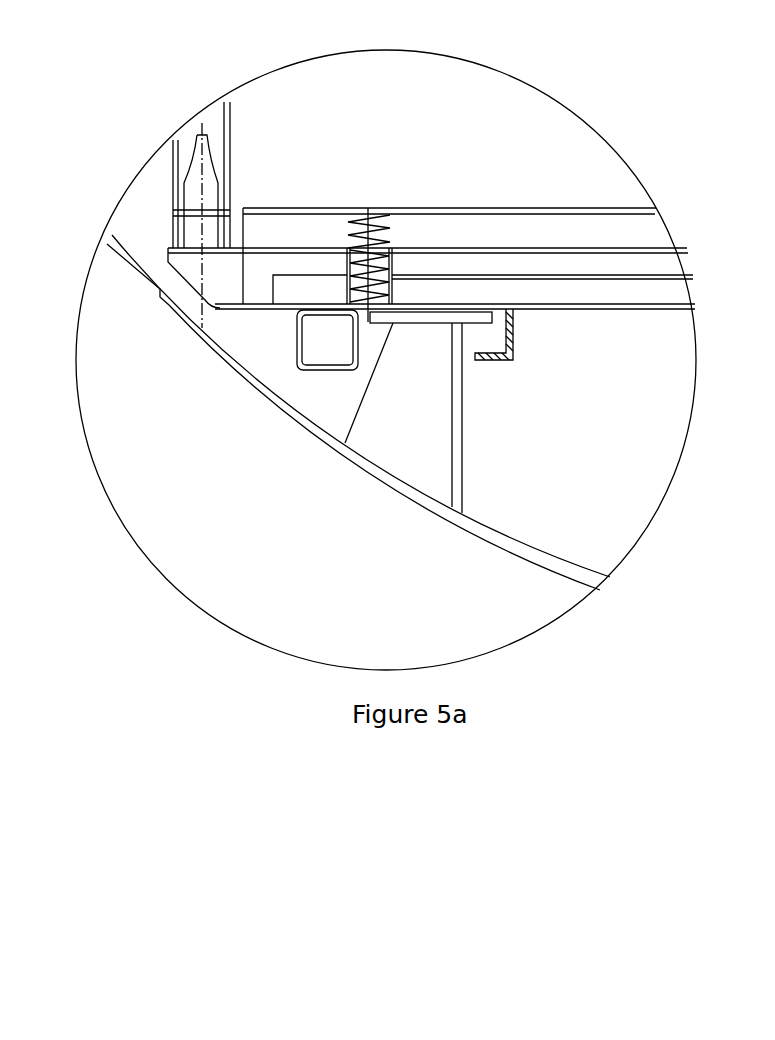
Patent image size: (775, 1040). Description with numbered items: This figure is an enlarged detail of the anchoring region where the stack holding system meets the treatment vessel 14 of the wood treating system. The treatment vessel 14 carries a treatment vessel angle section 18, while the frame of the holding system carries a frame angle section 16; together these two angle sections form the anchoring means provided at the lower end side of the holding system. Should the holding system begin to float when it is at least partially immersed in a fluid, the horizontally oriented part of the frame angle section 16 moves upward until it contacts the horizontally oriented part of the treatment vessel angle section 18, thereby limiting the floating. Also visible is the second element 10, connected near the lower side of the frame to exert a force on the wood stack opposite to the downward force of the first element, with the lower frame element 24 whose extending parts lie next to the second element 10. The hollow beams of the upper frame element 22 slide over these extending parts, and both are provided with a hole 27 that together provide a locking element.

The second element 10 is at (443, 258).
The treatment vessel 14 is at (361, 412).
The frame angle section 16 is at (497, 362).
The treatment vessel angle section 18 is at (431, 347).
The upper frame element 22 is at (201, 195).
The lower frame element 24 is at (192, 272).
The hole 27 is at (165, 190).